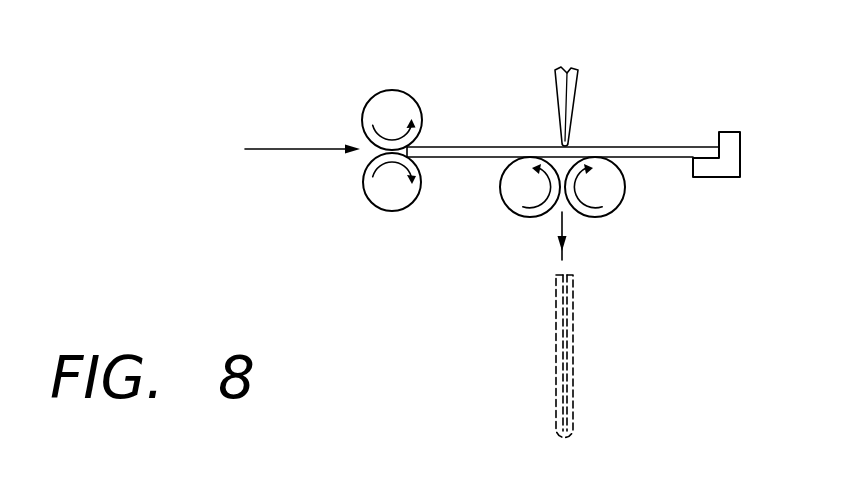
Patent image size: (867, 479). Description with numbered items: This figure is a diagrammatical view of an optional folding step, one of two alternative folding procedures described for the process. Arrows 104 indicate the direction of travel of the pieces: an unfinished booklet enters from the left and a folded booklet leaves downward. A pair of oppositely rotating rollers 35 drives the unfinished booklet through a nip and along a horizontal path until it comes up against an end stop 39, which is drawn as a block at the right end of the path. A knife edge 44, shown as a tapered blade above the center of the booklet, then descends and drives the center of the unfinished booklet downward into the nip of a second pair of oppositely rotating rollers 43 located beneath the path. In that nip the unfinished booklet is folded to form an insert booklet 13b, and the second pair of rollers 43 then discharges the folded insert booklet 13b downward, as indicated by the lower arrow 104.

The pair of oppositely rotating rollers 35 is at (400, 91).
The cutting blade 44 is at (575, 92).
The end stop 39 is at (740, 145).
The second pair of oppositely rotating rollers 43 is at (625, 183).
The arrows 104 is at (287, 150).
The insert booklet 13b is at (574, 310).